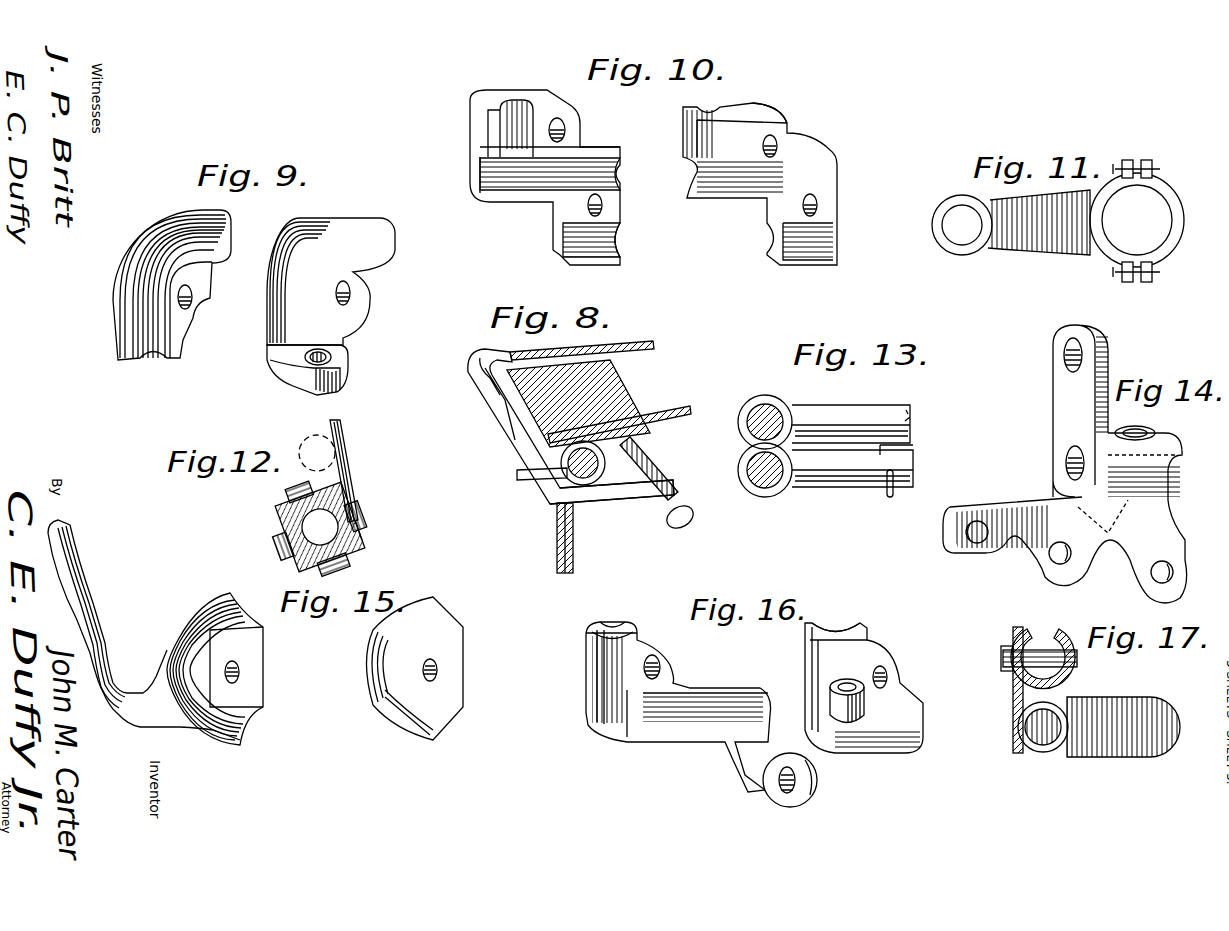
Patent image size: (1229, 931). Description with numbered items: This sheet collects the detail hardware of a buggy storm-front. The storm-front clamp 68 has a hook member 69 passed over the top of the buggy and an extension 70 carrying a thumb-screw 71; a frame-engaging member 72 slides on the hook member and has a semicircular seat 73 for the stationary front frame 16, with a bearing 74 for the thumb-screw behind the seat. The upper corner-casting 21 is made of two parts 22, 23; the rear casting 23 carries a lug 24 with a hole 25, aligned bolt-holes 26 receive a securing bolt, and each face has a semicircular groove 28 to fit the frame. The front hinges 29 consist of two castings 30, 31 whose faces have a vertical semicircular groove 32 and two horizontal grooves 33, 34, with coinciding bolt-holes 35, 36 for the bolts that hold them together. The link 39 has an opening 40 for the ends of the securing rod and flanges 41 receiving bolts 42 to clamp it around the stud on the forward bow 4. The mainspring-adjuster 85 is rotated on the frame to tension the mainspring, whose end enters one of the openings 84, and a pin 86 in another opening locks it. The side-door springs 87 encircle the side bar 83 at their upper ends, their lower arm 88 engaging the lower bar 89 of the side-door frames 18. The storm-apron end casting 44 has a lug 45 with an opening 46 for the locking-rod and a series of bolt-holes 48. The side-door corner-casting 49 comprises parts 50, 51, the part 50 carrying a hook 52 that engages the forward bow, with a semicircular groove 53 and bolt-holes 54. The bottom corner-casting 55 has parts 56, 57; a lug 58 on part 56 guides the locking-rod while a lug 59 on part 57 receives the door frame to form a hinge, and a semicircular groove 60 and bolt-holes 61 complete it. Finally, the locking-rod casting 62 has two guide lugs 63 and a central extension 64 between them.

In FIG. 8, the forward bow 4 is at (630, 395).
In FIG. 8, the stationary front frame 16 is at (560, 476).
In FIG. 13, the side-door frames 18 is at (853, 488).
In FIG. 9, the corner-casting 21 is at (174, 296).
In FIG. 9, the front part of corner-casting 22 is at (197, 306).
In FIG. 9, the rear casting 23 is at (312, 281).
In FIG. 9, the lug 24 is at (342, 357).
In FIG. 9, the hole 25 is at (308, 360).
In FIG. 9, the bolt-holes 26 is at (338, 290).
In FIG. 9, the semicircular groove 28 is at (168, 258).
In FIG. 10, the front hinges 29 is at (748, 184).
In FIG. 10, the hinge casting 30 is at (477, 103).
In FIG. 10, the hinge casting 31 is at (779, 122).
In FIG. 10, the vertical semicircular groove 32 is at (512, 118).
In FIG. 10, the horizontal groove 33 is at (493, 173).
In FIG. 10, the horizontal groove 34 is at (565, 237).
In FIG. 10, the bolt-hole 35 is at (566, 128).
In FIG. 10, the bolt-hole 36 is at (603, 210).
In FIG. 11, the link 39 is at (1055, 240).
In FIG. 11, the opening 40 is at (962, 228).
In FIG. 11, the flanges 41 is at (1132, 262).
In FIG. 11, the bolts 42 is at (1154, 170).
In FIG. 14, the end casting 44 is at (1167, 522).
In FIG. 14, the lug 45 is at (1063, 425).
In FIG. 14, the opening 46 is at (1064, 355).
In FIG. 14, the bolt-holes 48 is at (1156, 573).
In FIG. 15, the corner-casting 49 is at (317, 716).
In FIG. 15, the part of corner-casting 50 is at (256, 684).
In FIG. 15, the part of corner-casting 51 is at (456, 677).
In FIG. 15, the hook 52 is at (105, 629).
In FIG. 15, the semicircular groove 53 is at (213, 630).
In FIG. 15, the bolt-holes 54 is at (423, 668).
In FIG. 16, the bottom corner-casting 55 is at (678, 707).
In FIG. 16, the part of bottom corner-casting 56 is at (610, 724).
In FIG. 16, the part of bottom corner-casting 57 is at (878, 650).
In FIG. 16, the lug 58 is at (774, 798).
In FIG. 16, the lug 59 is at (851, 706).
In FIG. 16, the semicircular groove 60 is at (592, 670).
In FIG. 16, the bolt-holes 61 is at (661, 663).
In FIG. 17, the locking-rod casting 62 is at (1063, 659).
In FIG. 17, the lugs 63 is at (1043, 746).
In FIG. 17, the central extension 64 is at (1145, 758).
In FIG. 8, the storm-front clamp 68 is at (488, 421).
In FIG. 8, the hook member 69 is at (505, 355).
In FIG. 8, the extension 70 is at (622, 498).
In FIG. 8, the thumb-screw 71 is at (650, 470).
In FIG. 8, the frame-engaging member 72 is at (640, 431).
In FIG. 8, the semicircular seat 73 is at (583, 484).
In FIG. 8, the bearing 74 is at (633, 458).
In FIG. 13, the side bar 83 is at (771, 410).
In FIG. 12, the openings 84 is at (290, 497).
In FIG. 12, the spring-adjuster 85 is at (362, 537).
In FIG. 12, the pin 86 is at (350, 486).
In FIG. 13, the folding side-door springs 87 is at (775, 492).
In FIG. 13, the arm 88 is at (833, 450).
In FIG. 13, the lower bar 89 is at (878, 490).